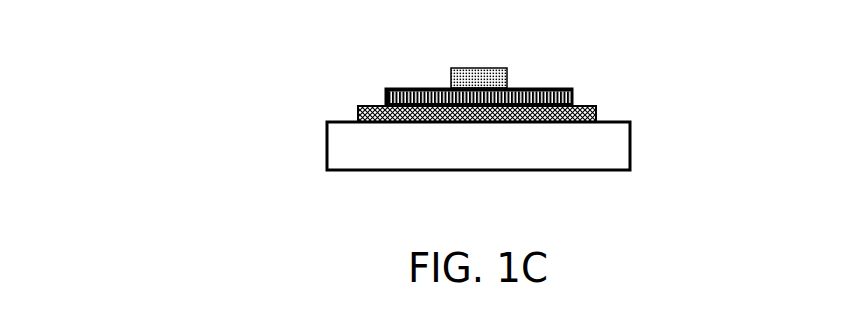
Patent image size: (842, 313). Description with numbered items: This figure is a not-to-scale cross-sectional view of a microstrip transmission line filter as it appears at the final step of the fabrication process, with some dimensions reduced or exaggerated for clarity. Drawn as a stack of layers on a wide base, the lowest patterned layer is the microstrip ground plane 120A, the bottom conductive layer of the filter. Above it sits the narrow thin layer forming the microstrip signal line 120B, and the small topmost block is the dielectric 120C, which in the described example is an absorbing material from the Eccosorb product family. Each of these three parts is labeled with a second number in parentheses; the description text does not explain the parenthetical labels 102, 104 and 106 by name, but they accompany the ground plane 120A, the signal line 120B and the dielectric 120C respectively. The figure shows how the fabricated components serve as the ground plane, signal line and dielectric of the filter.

The microstrip ground plane 120A is at (329, 123).
The first layer material 102 is at (357, 114).
The microstrip signal line 120B is at (369, 61).
The second layer material 104 is at (387, 88).
The dielectric 120C is at (589, 44).
The third layer material 106 is at (489, 68).